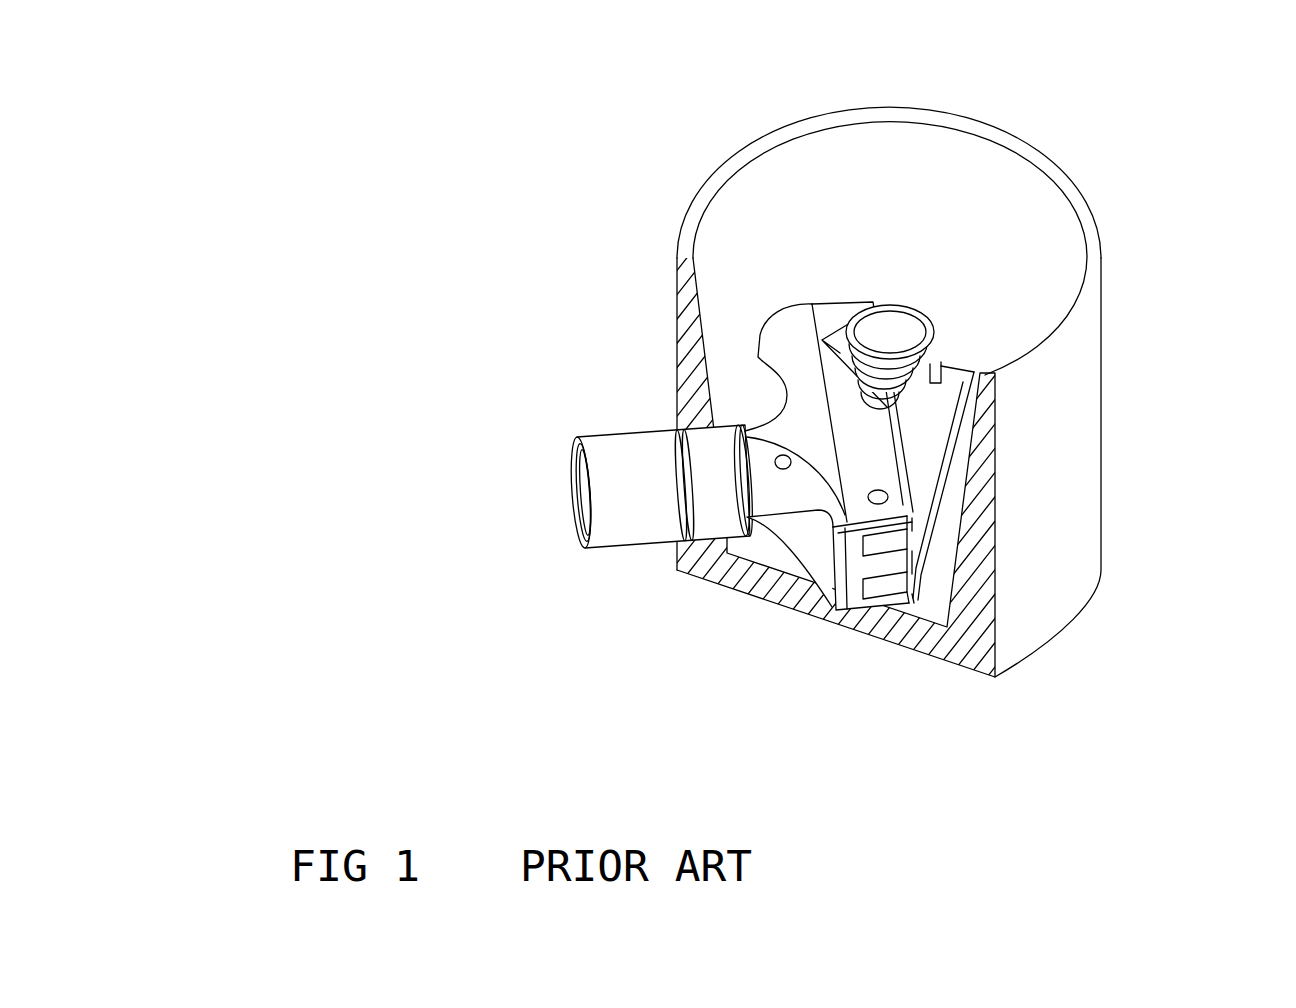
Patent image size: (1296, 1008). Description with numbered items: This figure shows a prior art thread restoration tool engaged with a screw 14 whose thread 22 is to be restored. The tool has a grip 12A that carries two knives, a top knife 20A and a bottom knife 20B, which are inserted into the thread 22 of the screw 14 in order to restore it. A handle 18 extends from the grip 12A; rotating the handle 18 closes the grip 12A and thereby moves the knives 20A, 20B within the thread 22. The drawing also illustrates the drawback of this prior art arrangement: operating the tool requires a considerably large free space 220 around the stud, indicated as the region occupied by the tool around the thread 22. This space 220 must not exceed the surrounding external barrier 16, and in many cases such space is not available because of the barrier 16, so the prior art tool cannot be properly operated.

The grip 12A is at (803, 532).
The screw 14 is at (897, 330).
The external barrier 16 is at (1089, 278).
The handle 18 is at (627, 448).
The top knife 20A is at (975, 370).
The bottom knife 20B is at (960, 432).
The thread 22 is at (937, 365).
The space 220 is at (557, 480).